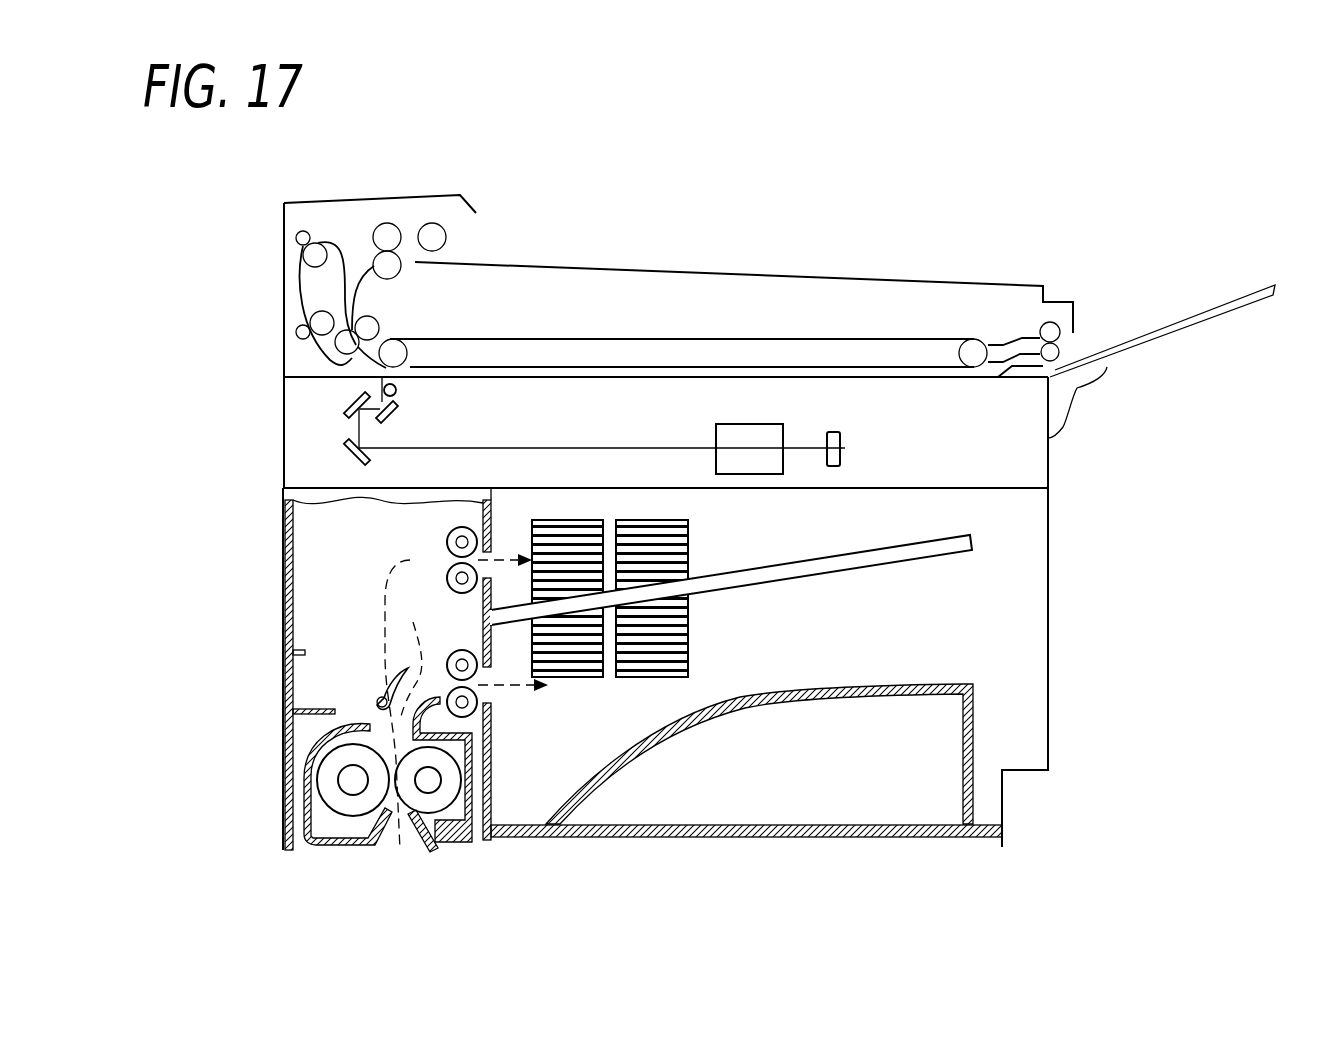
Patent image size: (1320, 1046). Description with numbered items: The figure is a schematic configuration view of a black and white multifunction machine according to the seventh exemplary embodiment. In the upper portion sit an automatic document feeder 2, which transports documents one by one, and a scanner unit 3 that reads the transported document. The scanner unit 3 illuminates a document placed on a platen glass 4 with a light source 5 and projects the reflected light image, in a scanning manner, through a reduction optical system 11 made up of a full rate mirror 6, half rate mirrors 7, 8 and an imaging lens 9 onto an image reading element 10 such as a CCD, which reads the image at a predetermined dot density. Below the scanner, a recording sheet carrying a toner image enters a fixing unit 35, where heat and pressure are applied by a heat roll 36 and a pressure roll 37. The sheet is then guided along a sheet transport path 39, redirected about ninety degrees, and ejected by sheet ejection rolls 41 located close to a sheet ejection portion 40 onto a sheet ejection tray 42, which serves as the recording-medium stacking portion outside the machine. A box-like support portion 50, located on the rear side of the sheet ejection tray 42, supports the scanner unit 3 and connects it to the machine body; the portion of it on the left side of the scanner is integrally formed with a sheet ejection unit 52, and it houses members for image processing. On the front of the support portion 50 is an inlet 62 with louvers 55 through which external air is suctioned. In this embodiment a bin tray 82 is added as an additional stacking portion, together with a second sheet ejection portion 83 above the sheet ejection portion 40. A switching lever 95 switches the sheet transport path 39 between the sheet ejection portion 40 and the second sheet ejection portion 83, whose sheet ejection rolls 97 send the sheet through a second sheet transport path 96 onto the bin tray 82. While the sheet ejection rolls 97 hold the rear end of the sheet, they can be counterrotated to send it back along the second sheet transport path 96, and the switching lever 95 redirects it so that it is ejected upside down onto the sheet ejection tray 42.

The automatic document feeder 2 is at (272, 298).
The scanner unit 3 is at (272, 426).
The platen glass 4 is at (817, 367).
The light source 5 is at (397, 391).
The full rate mirror 6 is at (398, 411).
The half rate mirror 7 is at (350, 400).
The half rate mirror 8 is at (346, 456).
The imaging lens 9 is at (735, 424).
The image reading element 10 is at (845, 448).
The reduction optical system 11 is at (876, 415).
The fixing unit 35 is at (290, 808).
The heat roll 36 is at (450, 773).
The pressure roll 37 is at (327, 780).
The sheet transport path 39 is at (417, 657).
The sheet ejection portion 40 is at (510, 671).
The sheet ejection rolls 41 is at (459, 648).
The sheet ejection tray 42 is at (780, 697).
The support portion 50 is at (1027, 580).
The sheet ejection unit 52 is at (272, 710).
The louvers 55 is at (652, 523).
The inlet 62 is at (568, 537).
The bin tray 82 is at (917, 552).
The second sheet ejection portion 83 is at (272, 546).
The switching lever 95 is at (380, 678).
The second sheet transport path 96 is at (390, 583).
The sheet ejection rolls 97 is at (447, 540).